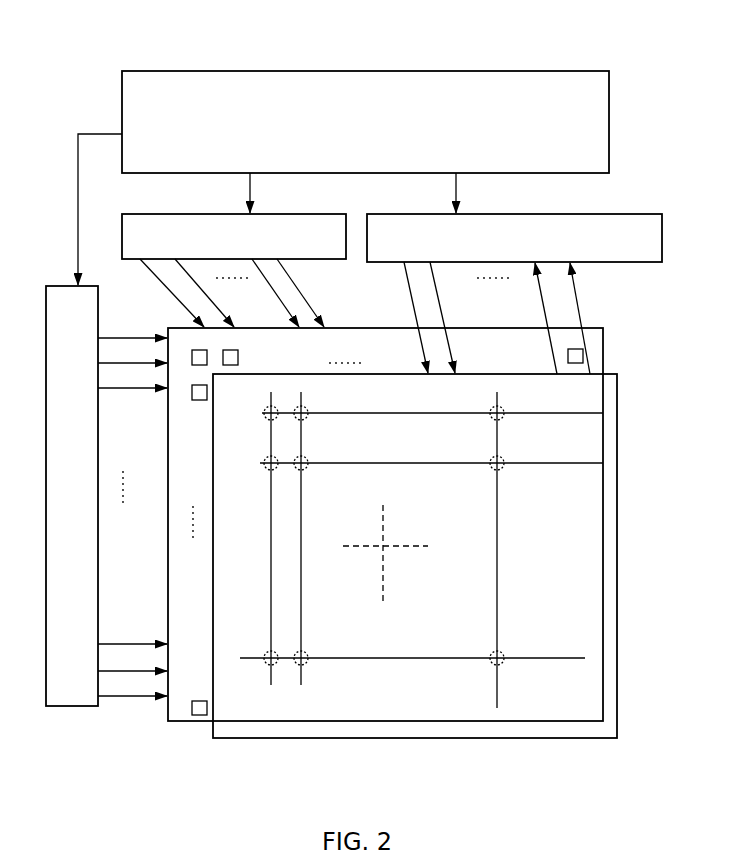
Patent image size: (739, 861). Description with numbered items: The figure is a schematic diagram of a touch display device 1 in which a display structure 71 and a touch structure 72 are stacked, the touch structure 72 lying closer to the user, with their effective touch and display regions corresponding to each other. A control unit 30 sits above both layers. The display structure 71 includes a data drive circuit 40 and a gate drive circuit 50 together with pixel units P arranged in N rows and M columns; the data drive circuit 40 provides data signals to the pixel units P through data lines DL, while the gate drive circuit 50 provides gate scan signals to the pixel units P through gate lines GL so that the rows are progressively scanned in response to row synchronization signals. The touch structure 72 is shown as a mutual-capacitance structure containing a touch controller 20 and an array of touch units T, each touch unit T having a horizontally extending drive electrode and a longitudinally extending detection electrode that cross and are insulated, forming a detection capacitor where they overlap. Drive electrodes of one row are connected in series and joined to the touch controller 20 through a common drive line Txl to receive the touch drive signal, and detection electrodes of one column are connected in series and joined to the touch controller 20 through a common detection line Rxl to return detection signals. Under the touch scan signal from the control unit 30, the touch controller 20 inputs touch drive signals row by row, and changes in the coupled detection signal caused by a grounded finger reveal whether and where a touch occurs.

The touch display device 1 is at (334, 50).
The control unit 30 is at (365, 122).
The data drive circuit 40 is at (234, 236).
The touch controller 20 is at (514, 238).
The gate drive circuit 50 is at (72, 496).
The display structure 71 is at (167, 721).
The touch structure 72 is at (213, 738).
The gate lines GL is at (108, 337).
The data lines DL is at (157, 276).
The pixel units P is at (238, 362).
The touch units T is at (307, 412).
The drive line Txl is at (435, 281).
The detection line Rxl is at (573, 276).